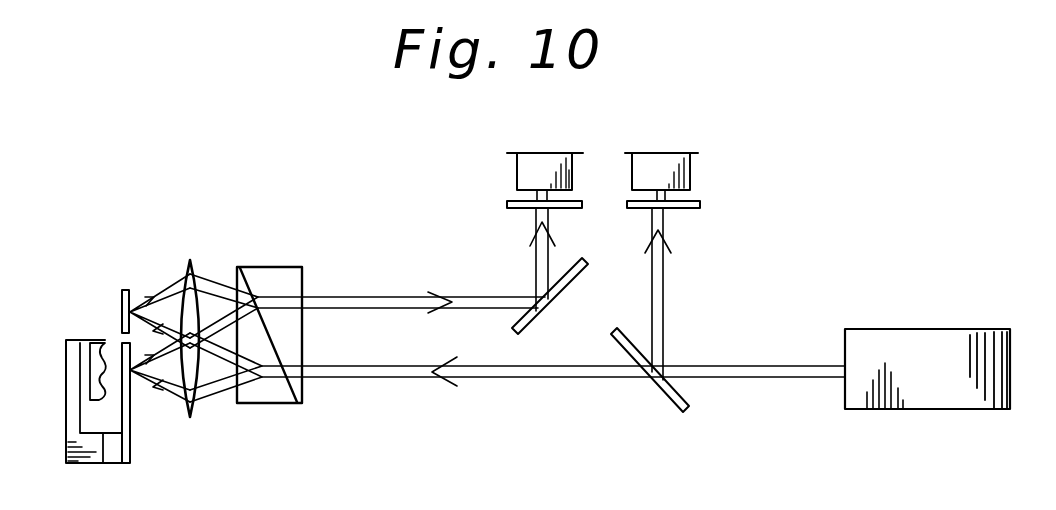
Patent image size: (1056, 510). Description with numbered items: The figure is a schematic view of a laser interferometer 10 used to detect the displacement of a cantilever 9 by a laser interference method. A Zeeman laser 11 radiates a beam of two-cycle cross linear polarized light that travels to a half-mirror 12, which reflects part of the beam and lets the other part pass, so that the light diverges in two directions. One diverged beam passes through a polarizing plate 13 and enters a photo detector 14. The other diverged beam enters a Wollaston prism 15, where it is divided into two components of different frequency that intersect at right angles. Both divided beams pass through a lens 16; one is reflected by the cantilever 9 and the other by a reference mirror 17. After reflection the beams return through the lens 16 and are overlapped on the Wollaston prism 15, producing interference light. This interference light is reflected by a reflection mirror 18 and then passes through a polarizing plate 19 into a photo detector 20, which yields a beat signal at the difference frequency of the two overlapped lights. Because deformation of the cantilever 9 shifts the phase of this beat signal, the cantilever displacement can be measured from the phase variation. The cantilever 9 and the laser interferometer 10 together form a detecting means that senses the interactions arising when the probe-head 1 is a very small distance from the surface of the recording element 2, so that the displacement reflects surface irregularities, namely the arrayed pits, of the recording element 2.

The laser interferometer 10 is at (828, 173).
The probe-head 1 is at (115, 354).
The recording element 2 is at (95, 340).
The cantilever 9 is at (130, 428).
The Zeeman laser 11 is at (915, 340).
The half-mirror 12 is at (668, 394).
The polarizing plate 13 is at (700, 206).
The photo detector 14 is at (682, 166).
The Wollaston prism 15 is at (277, 405).
The lens 16 is at (193, 413).
The reference mirror 17 is at (130, 293).
The reflection mirror 18 is at (566, 290).
The polarizing plate 19 is at (507, 205).
The photo detector 20 is at (527, 167).